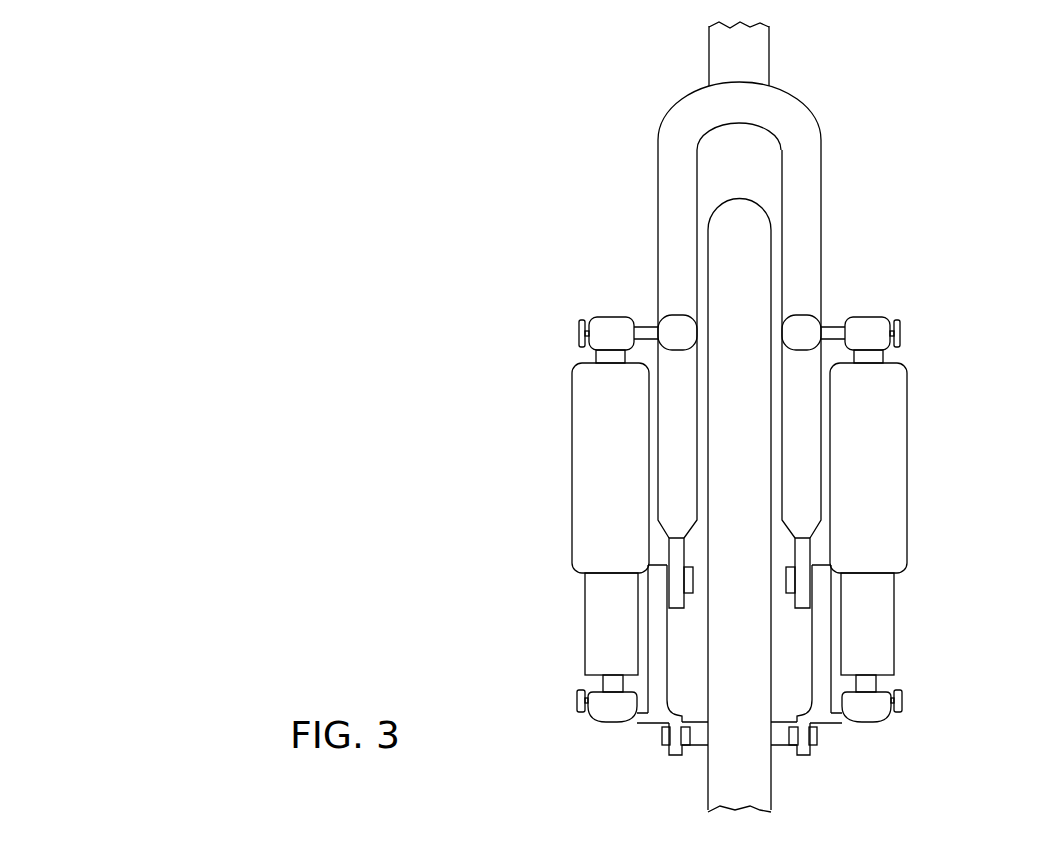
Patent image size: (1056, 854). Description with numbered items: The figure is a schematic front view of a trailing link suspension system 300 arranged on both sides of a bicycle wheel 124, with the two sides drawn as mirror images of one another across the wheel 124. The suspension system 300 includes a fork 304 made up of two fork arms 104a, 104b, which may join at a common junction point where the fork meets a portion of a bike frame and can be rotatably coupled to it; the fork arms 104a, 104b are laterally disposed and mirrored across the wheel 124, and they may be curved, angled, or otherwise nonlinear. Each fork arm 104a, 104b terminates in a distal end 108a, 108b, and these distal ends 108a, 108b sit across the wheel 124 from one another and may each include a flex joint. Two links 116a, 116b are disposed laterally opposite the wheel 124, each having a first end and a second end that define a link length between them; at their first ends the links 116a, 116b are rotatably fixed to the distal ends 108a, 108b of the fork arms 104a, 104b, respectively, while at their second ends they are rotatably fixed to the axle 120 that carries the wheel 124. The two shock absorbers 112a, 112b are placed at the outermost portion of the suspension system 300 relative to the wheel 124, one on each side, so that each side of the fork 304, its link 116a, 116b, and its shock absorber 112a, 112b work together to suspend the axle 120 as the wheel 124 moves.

The trailing link suspension system 300 is at (160, 140).
The fork 304 is at (773, 118).
The fork arm 104a is at (673, 283).
The fork arm 104b is at (803, 278).
The distal end 108a is at (677, 567).
The distal end 108b is at (803, 587).
The shock absorber 112a is at (617, 442).
The shock absorber 112b is at (870, 430).
The link 116a is at (662, 657).
The link 116b is at (818, 657).
The axle 120 is at (783, 728).
The bicycle wheel 124 is at (761, 637).